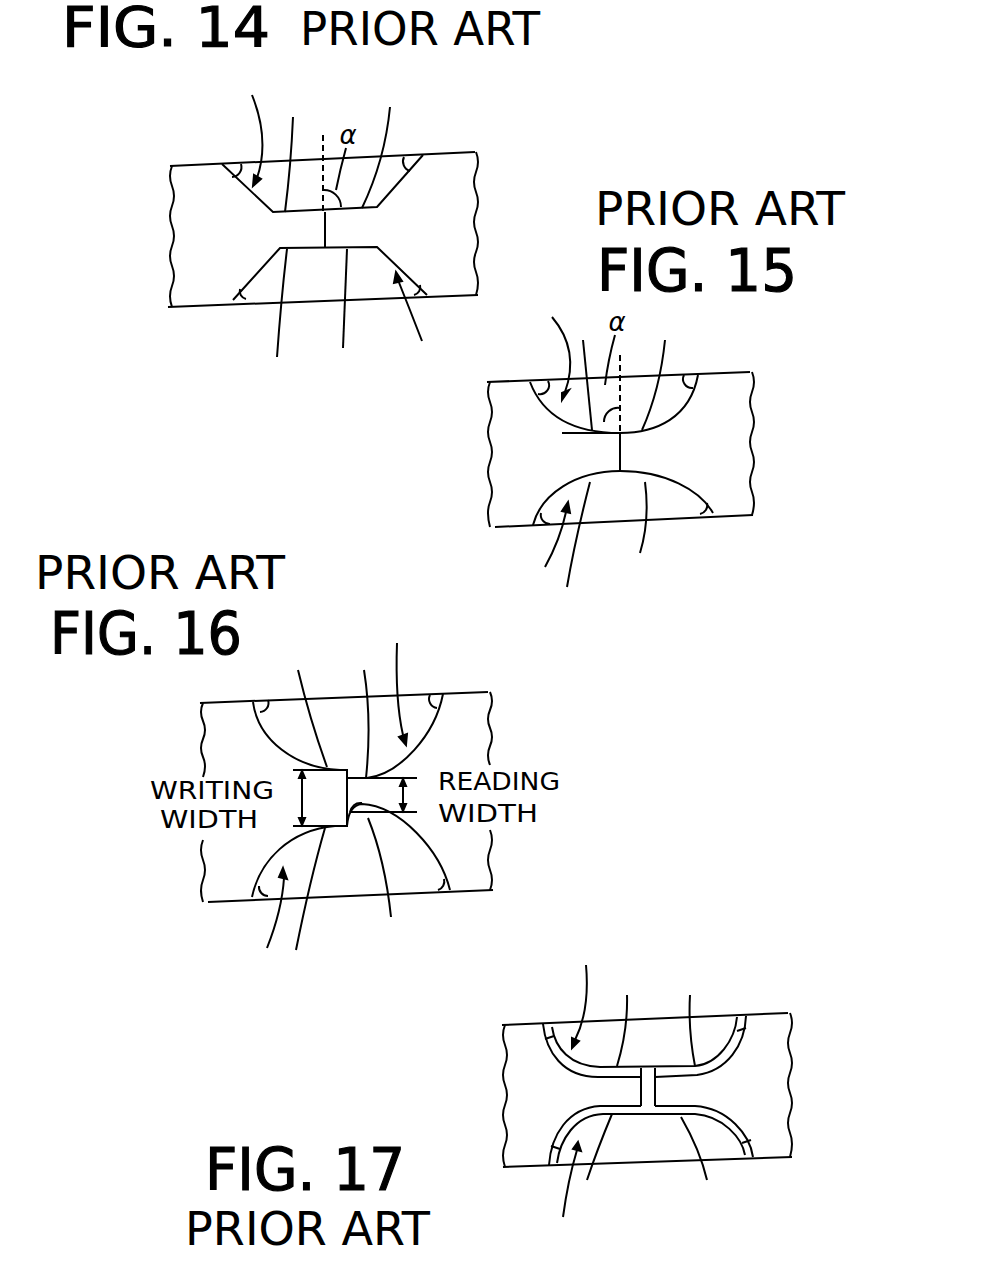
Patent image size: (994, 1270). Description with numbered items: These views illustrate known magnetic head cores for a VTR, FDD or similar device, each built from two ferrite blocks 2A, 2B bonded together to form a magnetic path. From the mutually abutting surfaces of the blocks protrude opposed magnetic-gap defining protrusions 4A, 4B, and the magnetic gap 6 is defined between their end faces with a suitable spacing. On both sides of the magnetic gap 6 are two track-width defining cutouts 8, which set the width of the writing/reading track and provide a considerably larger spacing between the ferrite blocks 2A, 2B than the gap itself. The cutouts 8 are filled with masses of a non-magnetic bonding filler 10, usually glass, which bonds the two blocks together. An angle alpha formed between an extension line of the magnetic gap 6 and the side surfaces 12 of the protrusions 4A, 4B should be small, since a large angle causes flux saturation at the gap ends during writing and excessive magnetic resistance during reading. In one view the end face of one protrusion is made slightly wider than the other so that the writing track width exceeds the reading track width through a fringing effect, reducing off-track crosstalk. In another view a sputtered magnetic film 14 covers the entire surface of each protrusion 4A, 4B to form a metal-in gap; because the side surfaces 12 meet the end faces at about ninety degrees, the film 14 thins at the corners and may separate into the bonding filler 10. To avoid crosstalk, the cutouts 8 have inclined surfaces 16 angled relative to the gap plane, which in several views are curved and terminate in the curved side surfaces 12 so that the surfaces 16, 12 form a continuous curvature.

In FIG. 14, the ferrite block 2A is at (186, 223).
In FIG. 15, the ferrite block 2A is at (508, 474).
In FIG. 16, the ferrite block 2A is at (218, 742).
In FIG. 17, the ferrite block 2A is at (520, 1110).
In FIG. 14, the ferrite block 2B is at (456, 174).
In FIG. 15, the ferrite block 2B is at (732, 398).
In FIG. 16, the ferrite block 2B is at (472, 720).
In FIG. 17, the ferrite block 2B is at (770, 1083).
In FIG. 14, the magnetic-gap defining protrusion 4A is at (312, 241).
In FIG. 15, the magnetic-gap defining protrusion 4A is at (607, 478).
In FIG. 16, the magnetic-gap defining protrusion 4A is at (332, 820).
In FIG. 17, the magnetic-gap defining protrusion 4A is at (624, 1097).
In FIG. 14, the magnetic-gap defining protrusion 4B is at (350, 241).
In FIG. 15, the magnetic-gap defining protrusion 4B is at (653, 468).
In FIG. 16, the magnetic-gap defining protrusion 4B is at (380, 818).
In FIG. 17, the magnetic-gap defining protrusion 4B is at (666, 1098).
In FIG. 14, the magnetic gap 6 is at (327, 229).
In FIG. 15, the magnetic gap 6 is at (627, 452).
In FIG. 16, the magnetic gap 6 is at (352, 814).
In FIG. 17, the magnetic gap 6 is at (657, 1090).
In FIG. 14, the track-width defining cutout 8 is at (337, 218).
In FIG. 15, the track-width defining cutout 8 is at (548, 441).
In FIG. 16, the track-width defining cutout 8 is at (327, 789).
In FIG. 17, the track-width defining cutout 8 is at (574, 1091).
In FIG. 14, the non-magnetic bonding filler 10 is at (260, 293).
In FIG. 15, the non-magnetic bonding filler 10 is at (629, 513).
In FIG. 16, the non-magnetic bonding filler 10 is at (330, 707).
In FIG. 17, the non-magnetic bonding filler 10 is at (647, 1140).
In FIG. 14, the side surface 12 is at (329, 232).
In FIG. 15, the side surface 12 is at (615, 464).
In FIG. 16, the side surface 12 is at (341, 810).
In FIG. 17, the side surface 12 is at (651, 1089).
In FIG. 17, the magnetic film 14 is at (555, 1047).
In FIG. 14, the inclined surface 16 is at (240, 162).
In FIG. 15, the inclined surface 16 is at (547, 383).
In FIG. 16, the inclined surface 16 is at (268, 700).
In FIG. 17, the inclined surface 16 is at (563, 1020).